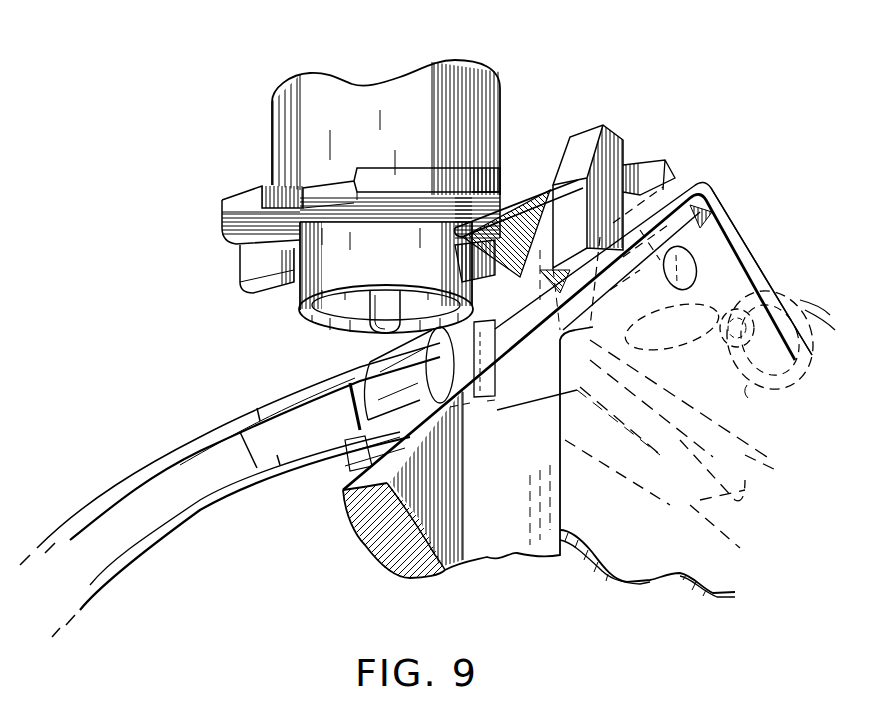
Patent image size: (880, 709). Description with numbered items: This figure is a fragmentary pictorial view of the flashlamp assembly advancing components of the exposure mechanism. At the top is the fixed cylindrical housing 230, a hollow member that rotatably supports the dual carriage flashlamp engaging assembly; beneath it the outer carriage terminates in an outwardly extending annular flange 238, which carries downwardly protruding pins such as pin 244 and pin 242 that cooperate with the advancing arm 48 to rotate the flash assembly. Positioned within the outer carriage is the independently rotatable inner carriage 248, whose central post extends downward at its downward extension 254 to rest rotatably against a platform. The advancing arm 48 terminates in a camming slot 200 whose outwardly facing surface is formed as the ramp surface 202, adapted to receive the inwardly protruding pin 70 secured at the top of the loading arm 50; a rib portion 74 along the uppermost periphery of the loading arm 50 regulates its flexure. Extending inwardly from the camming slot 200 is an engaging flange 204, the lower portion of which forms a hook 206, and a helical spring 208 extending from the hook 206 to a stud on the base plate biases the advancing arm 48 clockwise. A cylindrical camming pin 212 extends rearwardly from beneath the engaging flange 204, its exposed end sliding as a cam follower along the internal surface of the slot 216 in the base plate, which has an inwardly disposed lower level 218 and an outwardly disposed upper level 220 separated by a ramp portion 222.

The fixed cylindrical housing 230 is at (482, 75).
The annular flange 238 is at (220, 206).
The downwardly protruding pin 244 is at (233, 272).
The inner carriage 248 is at (303, 308).
The downward extension of inner carriage post 254 is at (385, 334).
The downwardly protruding pin 242 is at (487, 262).
The engaging flange 204 is at (520, 207).
The camming slot 200 is at (627, 180).
The advancing arm 48 is at (662, 158).
The ramp surface 202 is at (684, 185).
The pin 70 is at (682, 262).
The rib portion 74 is at (747, 292).
The hook 206 is at (687, 340).
The helical spring 208 is at (748, 398).
The loading arm 50 is at (480, 557).
The slot 216 is at (188, 441).
The lower level 218 is at (167, 503).
The ramp portion 222 is at (300, 443).
The upper level 220 is at (360, 463).
The cylindrical camming pin 212 is at (366, 368).